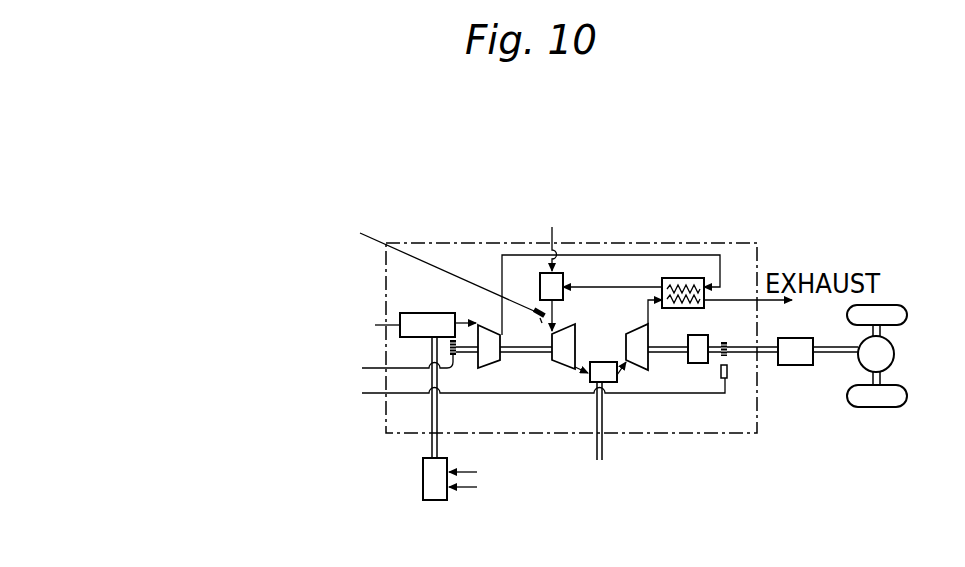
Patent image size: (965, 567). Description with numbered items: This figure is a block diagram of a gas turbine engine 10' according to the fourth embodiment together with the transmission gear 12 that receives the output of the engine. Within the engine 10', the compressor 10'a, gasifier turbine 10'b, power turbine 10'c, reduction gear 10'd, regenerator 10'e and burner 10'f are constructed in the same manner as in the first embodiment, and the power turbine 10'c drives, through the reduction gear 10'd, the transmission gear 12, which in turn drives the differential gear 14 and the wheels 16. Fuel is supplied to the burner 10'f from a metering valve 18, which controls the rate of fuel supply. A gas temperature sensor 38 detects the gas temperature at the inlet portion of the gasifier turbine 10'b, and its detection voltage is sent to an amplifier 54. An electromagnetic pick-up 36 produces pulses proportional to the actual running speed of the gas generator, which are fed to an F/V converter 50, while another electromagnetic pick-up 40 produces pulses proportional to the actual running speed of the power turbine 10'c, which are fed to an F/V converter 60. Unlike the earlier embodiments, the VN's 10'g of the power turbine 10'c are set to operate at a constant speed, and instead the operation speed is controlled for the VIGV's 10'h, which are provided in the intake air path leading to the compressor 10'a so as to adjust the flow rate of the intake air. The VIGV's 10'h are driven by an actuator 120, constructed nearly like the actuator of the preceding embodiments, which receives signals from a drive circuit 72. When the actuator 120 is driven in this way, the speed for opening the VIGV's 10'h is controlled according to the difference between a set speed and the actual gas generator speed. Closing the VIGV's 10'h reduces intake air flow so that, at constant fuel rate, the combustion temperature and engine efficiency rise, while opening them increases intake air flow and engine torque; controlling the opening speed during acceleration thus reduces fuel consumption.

The gas turbine engine 10' is at (571, 315).
The compressor 10'a is at (506, 377).
The gasifier turbine 10'b is at (570, 376).
The power turbine 10'c is at (665, 376).
The reduction gear 10'd is at (719, 334).
The regenerator 10'e is at (653, 282).
The burner 10'f is at (575, 296).
The VN's 10'g is at (612, 411).
The VIGV's 10'h is at (352, 370).
The transmission gear 12 is at (797, 365).
The differential gear 14 is at (894, 354).
The wheels 16 is at (895, 305).
The metering valve 18 is at (650, 206).
The electromagnetic pick-up 36 is at (452, 367).
The gas temperature sensor 38 is at (525, 324).
The electromagnetic pick-up 40 is at (728, 380).
The F/V converter 50 is at (265, 359).
The amplifier 54 is at (383, 259).
The F/V converter 60 is at (403, 401).
The drive circuit 72 is at (559, 508).
The actuator 120 is at (423, 485).